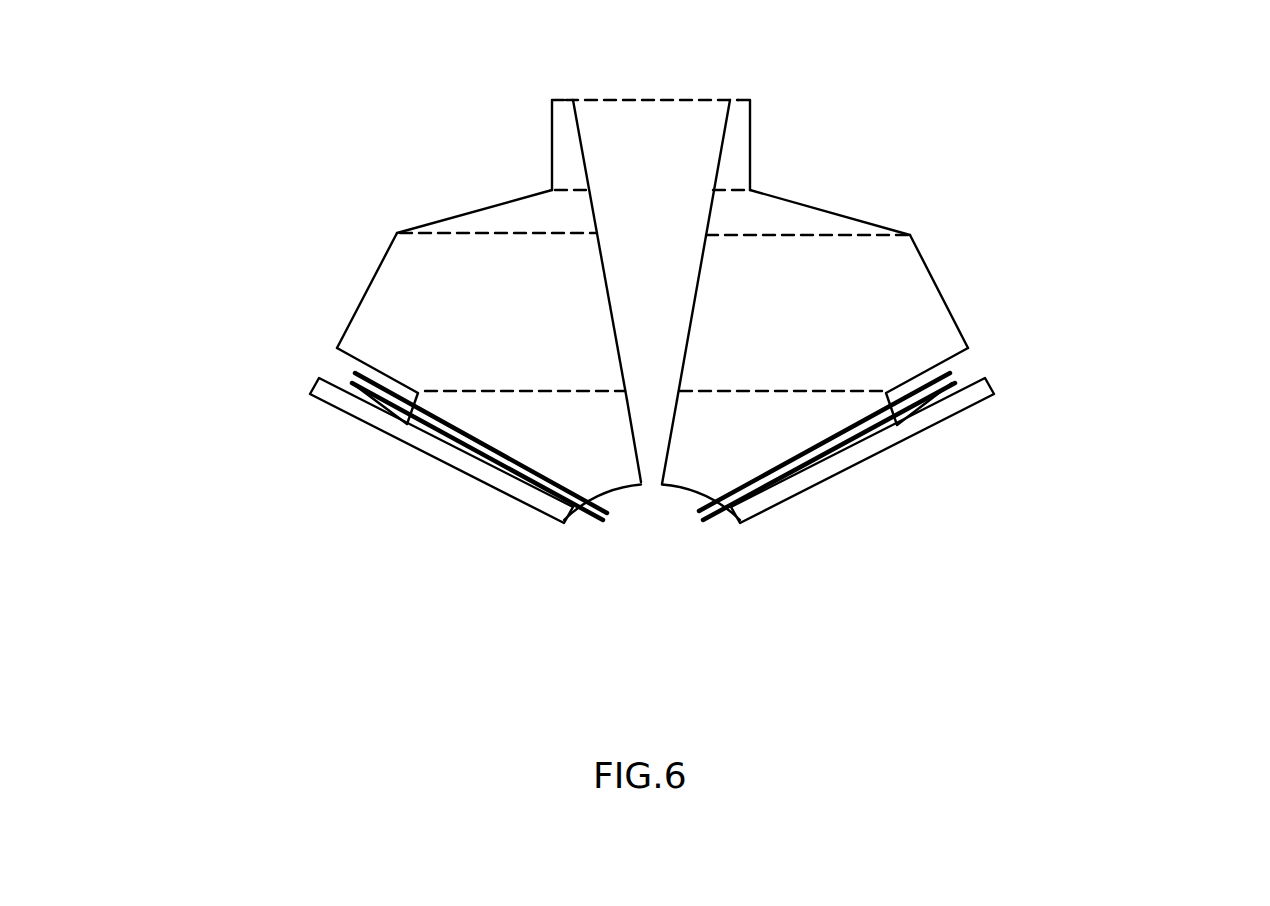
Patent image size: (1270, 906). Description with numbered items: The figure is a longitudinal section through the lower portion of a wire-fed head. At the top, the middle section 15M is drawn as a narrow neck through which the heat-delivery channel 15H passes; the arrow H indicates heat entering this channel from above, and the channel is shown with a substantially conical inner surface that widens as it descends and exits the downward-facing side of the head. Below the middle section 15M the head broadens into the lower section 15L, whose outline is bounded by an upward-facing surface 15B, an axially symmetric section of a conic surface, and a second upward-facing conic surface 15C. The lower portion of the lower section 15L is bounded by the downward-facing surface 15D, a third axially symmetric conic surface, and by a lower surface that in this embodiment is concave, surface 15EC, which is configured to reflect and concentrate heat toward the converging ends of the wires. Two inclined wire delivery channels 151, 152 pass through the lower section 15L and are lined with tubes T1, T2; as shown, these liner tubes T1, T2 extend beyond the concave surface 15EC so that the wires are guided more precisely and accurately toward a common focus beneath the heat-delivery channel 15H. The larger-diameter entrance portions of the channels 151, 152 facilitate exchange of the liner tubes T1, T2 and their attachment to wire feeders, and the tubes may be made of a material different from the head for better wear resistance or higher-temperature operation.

The heat source direction indicator H is at (666, 116).
The middle section 15M is at (528, 97).
The heat-delivery channel 15H is at (653, 215).
The upward-facing surface 15B is at (857, 218).
The upward-facing surface 15C is at (362, 292).
The lower section 15L is at (1172, 188).
The wire delivery channel 151 is at (463, 442).
The wire delivery channel 152 is at (930, 407).
The downward-facing surface 15D is at (802, 500).
The liner tube T1 is at (600, 495).
The liner tube T2 is at (713, 520).
The concave lower surface 15EC is at (630, 485).